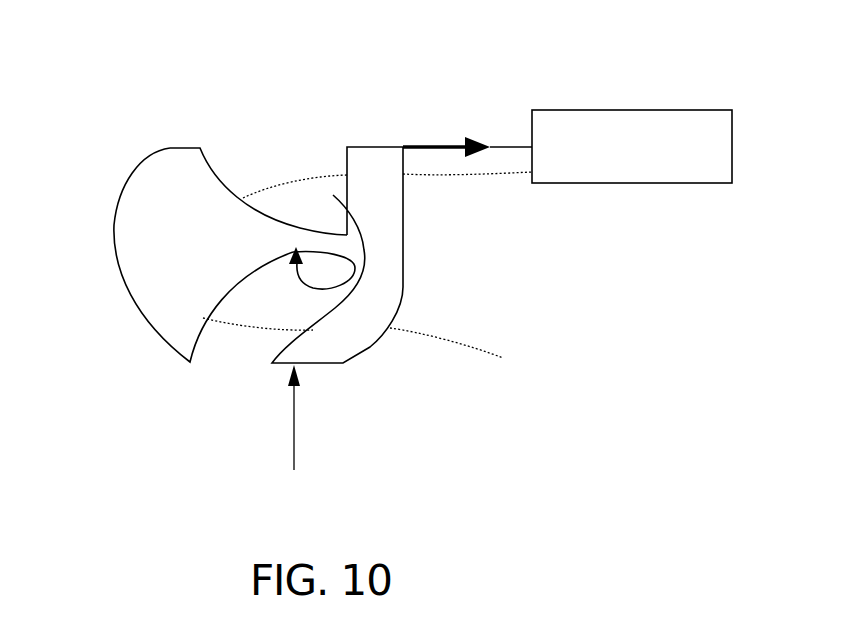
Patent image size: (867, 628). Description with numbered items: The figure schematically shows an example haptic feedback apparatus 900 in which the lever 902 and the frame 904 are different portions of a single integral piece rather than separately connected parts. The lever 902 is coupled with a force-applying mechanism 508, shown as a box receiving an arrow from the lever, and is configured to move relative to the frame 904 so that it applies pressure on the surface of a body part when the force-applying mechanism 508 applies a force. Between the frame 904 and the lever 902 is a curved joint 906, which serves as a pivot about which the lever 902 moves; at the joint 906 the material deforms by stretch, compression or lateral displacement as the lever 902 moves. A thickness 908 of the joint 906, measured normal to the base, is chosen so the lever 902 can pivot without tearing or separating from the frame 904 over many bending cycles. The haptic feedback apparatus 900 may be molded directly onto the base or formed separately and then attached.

The haptic feedback apparatus 900 is at (126, 82).
The lever 902 is at (403, 288).
The frame 904 is at (113, 218).
The joint 906 is at (340, 256).
The thickness 908 is at (453, 344).
The force-applying mechanism 508 is at (567, 146).